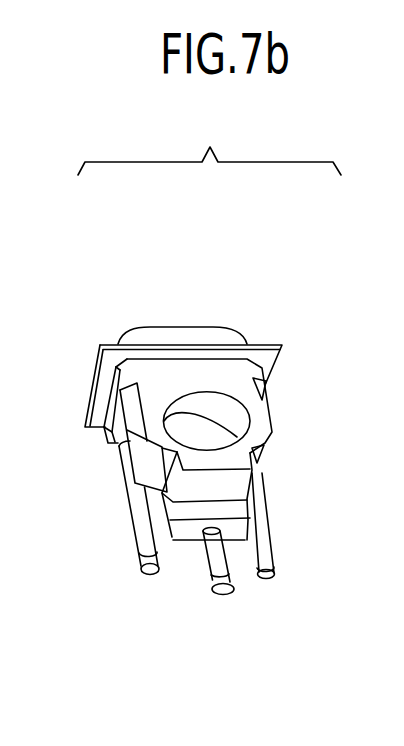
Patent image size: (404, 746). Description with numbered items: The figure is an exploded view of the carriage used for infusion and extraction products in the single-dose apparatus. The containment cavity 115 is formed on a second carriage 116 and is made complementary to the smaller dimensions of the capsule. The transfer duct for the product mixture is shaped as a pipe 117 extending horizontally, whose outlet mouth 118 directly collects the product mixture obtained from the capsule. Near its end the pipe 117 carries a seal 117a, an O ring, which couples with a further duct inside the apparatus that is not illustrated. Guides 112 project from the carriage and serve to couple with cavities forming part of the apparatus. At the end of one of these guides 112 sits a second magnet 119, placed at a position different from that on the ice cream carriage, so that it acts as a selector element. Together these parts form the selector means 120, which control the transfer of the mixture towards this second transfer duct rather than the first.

The guides 112 is at (120, 463).
The containment cavity 115 is at (214, 403).
The second carriage 116 is at (280, 328).
The pipe 117 is at (273, 578).
The seal 117a is at (222, 554).
The outlet mouth 118 is at (227, 590).
The second magnet 119 is at (152, 554).
The selector means 120 is at (135, 562).